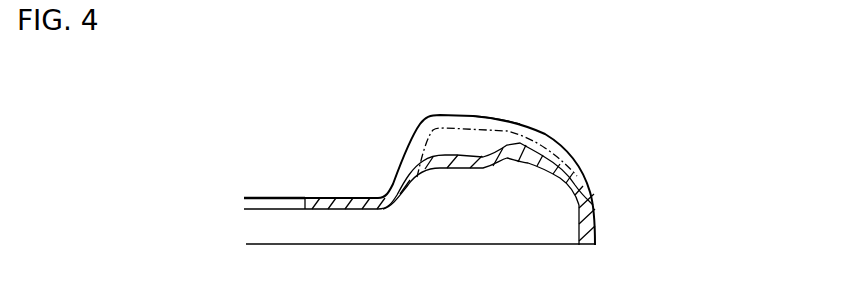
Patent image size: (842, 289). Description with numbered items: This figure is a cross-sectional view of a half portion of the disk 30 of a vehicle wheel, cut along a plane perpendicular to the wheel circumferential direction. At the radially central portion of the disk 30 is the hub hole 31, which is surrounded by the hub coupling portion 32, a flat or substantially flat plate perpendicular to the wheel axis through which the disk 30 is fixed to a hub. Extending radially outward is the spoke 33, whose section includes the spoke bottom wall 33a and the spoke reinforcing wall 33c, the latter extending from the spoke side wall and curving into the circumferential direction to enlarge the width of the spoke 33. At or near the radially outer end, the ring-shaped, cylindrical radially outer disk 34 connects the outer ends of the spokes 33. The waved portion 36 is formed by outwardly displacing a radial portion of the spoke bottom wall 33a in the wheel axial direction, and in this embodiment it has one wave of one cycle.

The disk 30 is at (252, 192).
The hub hole 31 is at (277, 199).
The hub coupling portion 32 is at (328, 198).
The spoke 33 is at (422, 112).
The spoke bottom wall 33a is at (463, 155).
The spoke reinforcing wall 33c is at (495, 117).
The radially outer disk 34 is at (597, 225).
The waved portion 36 is at (517, 138).